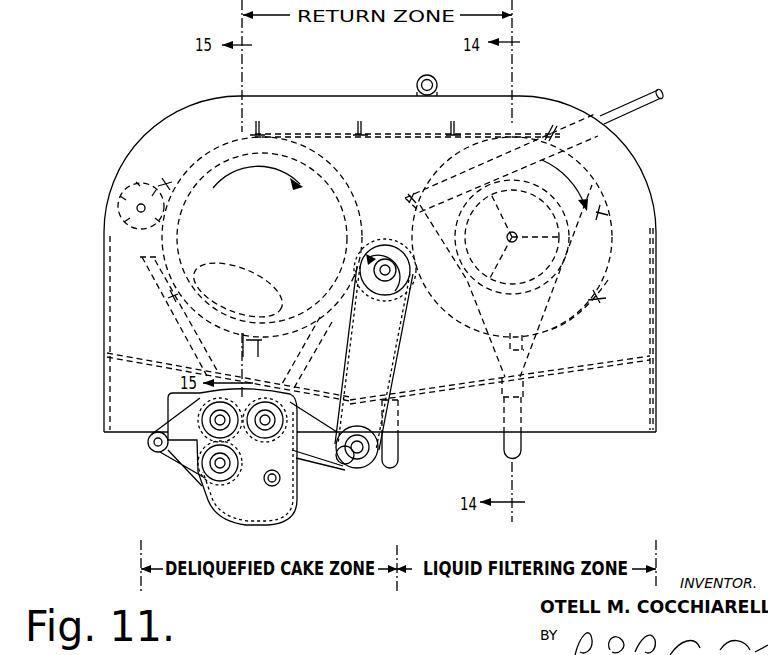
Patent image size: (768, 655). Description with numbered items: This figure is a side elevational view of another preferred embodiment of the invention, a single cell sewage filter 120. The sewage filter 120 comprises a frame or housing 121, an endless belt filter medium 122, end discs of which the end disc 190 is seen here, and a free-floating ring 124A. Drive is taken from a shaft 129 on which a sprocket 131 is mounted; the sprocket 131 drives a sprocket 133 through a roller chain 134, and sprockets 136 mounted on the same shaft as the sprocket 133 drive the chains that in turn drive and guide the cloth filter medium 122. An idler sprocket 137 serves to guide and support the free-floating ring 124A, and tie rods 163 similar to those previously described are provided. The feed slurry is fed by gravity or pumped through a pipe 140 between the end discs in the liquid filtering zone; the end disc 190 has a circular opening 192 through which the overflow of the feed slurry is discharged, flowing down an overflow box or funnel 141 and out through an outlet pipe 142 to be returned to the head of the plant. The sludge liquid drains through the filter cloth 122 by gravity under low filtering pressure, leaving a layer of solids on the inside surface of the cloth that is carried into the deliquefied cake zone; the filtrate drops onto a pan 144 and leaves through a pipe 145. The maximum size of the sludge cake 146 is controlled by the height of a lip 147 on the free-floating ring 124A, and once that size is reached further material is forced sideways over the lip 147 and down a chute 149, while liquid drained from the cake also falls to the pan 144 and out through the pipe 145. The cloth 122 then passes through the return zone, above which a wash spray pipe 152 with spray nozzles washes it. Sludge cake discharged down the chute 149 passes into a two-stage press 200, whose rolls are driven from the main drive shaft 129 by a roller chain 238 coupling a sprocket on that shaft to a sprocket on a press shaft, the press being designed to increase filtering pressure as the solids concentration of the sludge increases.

The single cell sewage filter 120 is at (668, 197).
The frame or housing 121 is at (656, 332).
The endless belt filter medium 122 is at (298, 135).
The free-floating ring 124A is at (195, 168).
The shaft 129 is at (362, 456).
The sprocket 131 is at (348, 460).
The sprocket 133 is at (391, 289).
The roller chain 134 is at (400, 362).
The sprockets 136 is at (378, 302).
The idler sprocket 137 is at (116, 203).
The pipe 140 is at (660, 92).
The overflow box or funnel 141 is at (535, 338).
The outlet pipe 142 is at (522, 449).
The pan 144 is at (618, 366).
The pipe 145 is at (400, 457).
The sludge cake 146 is at (240, 270).
The lip 147 is at (180, 240).
The chute 149 is at (178, 332).
The wash spray pipe 152 is at (436, 82).
The tie rods 163 is at (608, 280).
The end disc 190 is at (600, 182).
The circular opening 192 is at (520, 237).
The two-stage press 200 is at (178, 483).
The roller chain 238 is at (322, 462).